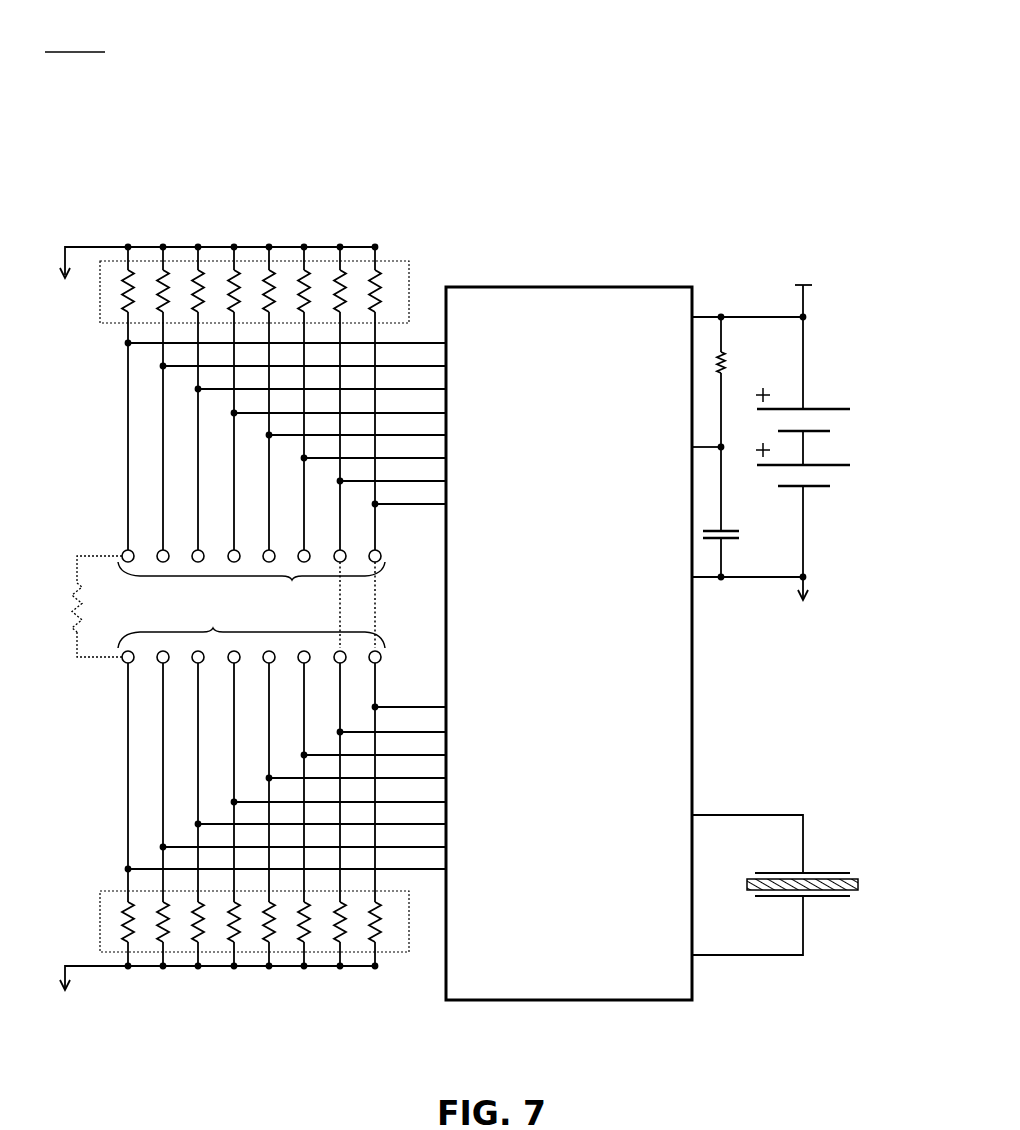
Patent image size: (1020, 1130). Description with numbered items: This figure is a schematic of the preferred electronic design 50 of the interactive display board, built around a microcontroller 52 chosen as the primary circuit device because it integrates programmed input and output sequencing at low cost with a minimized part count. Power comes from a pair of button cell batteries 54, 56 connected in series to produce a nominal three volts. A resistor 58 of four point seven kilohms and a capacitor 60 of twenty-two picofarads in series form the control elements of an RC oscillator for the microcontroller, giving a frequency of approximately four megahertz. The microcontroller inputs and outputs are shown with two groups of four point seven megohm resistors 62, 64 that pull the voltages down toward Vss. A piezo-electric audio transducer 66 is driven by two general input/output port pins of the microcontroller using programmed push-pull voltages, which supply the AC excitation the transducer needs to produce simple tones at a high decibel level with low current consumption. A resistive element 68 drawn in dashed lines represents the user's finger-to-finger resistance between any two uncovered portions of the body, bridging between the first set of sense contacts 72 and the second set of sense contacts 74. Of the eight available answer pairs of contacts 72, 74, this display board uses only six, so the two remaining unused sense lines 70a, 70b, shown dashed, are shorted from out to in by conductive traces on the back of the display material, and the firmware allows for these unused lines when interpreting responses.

The electronic design 50 is at (823, 101).
The microcontroller 52 is at (567, 287).
The battery 54 is at (832, 406).
The battery 56 is at (832, 463).
The resistor 58 is at (726, 365).
The capacitor 60 is at (728, 531).
The resistors 62 is at (409, 261).
The resistors 64 is at (387, 952).
The piezo-electric audio transducer 66 is at (836, 872).
The resistive element 68 is at (86, 602).
The unused sense line 70a is at (378, 592).
The unused sense line 70b is at (378, 618).
The first set of sense contacts 72 is at (282, 461).
The second set of sense contacts 74 is at (282, 751).